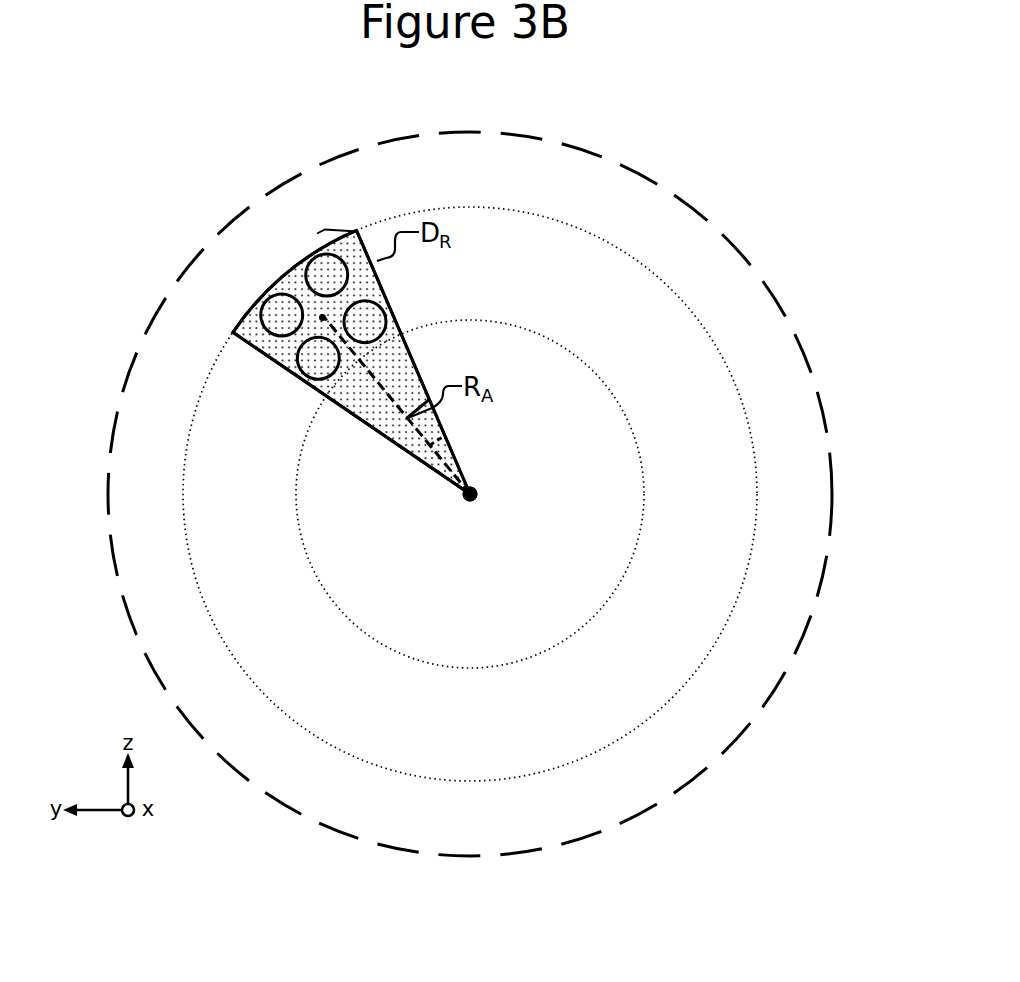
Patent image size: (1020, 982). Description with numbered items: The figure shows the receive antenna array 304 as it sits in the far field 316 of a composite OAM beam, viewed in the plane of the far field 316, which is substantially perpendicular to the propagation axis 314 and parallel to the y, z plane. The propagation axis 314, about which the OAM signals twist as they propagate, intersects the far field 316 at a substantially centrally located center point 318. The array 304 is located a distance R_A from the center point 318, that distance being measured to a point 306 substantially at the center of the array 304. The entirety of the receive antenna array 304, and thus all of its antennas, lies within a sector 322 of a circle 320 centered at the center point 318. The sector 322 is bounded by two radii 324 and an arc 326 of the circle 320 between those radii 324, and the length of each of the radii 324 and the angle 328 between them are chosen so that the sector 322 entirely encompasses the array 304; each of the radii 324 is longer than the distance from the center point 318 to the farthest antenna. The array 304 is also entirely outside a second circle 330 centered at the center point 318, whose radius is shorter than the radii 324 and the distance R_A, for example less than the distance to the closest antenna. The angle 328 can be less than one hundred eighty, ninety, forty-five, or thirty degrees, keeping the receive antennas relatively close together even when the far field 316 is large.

The receive antenna array 304 is at (260, 328).
The point at the center of the array 306 is at (322, 318).
The propagation axis 314 is at (477, 503).
The far field 316 is at (714, 219).
The center point 318 is at (480, 491).
The circle 320 is at (550, 216).
The sector 322 is at (399, 321).
The radii 324 is at (417, 368).
The arc 326 is at (281, 272).
The angle 328 is at (427, 451).
The second circle 330 is at (563, 344).